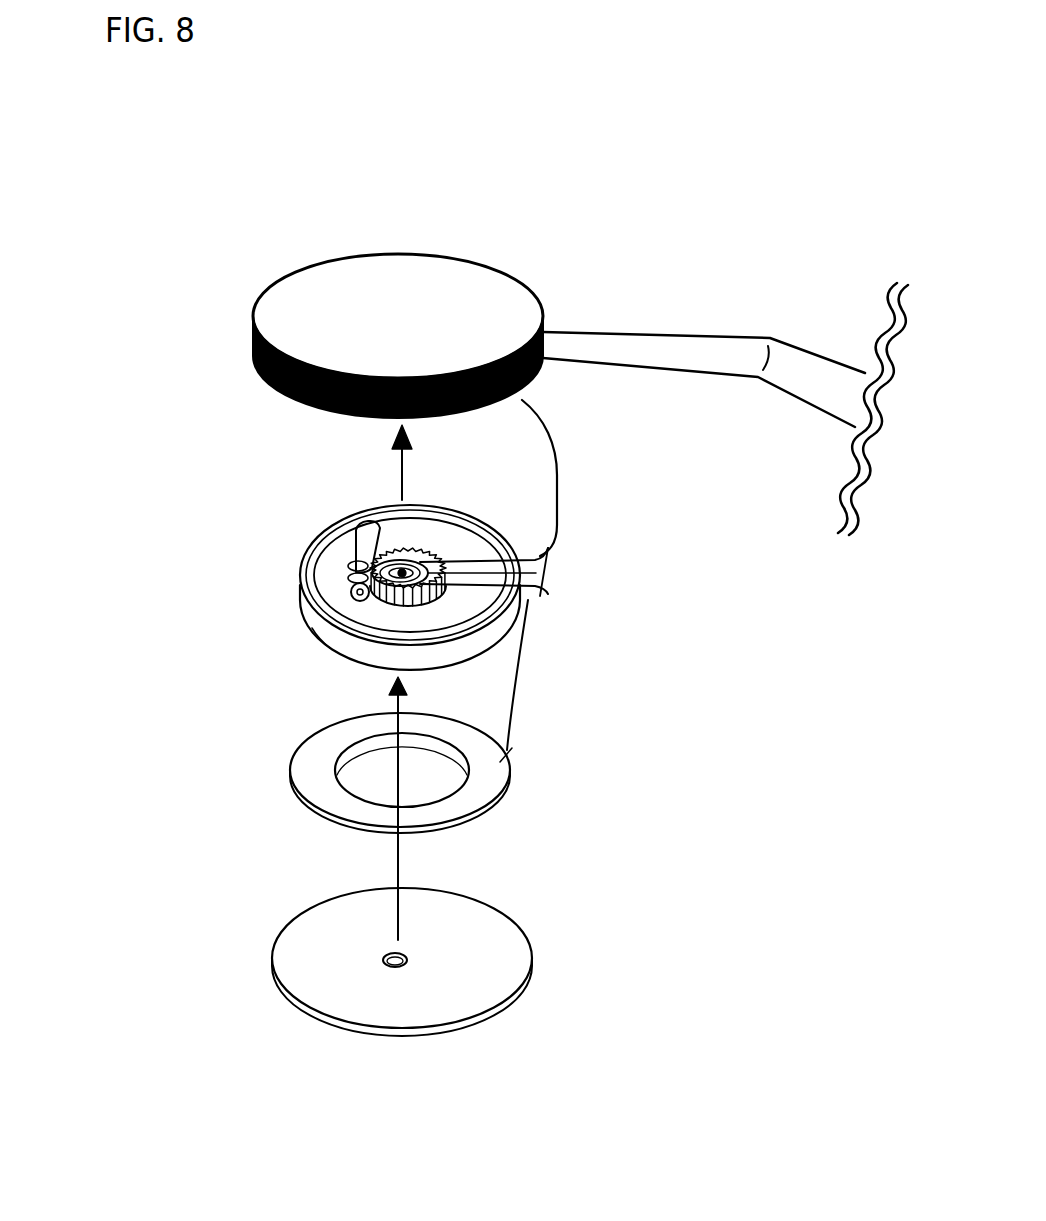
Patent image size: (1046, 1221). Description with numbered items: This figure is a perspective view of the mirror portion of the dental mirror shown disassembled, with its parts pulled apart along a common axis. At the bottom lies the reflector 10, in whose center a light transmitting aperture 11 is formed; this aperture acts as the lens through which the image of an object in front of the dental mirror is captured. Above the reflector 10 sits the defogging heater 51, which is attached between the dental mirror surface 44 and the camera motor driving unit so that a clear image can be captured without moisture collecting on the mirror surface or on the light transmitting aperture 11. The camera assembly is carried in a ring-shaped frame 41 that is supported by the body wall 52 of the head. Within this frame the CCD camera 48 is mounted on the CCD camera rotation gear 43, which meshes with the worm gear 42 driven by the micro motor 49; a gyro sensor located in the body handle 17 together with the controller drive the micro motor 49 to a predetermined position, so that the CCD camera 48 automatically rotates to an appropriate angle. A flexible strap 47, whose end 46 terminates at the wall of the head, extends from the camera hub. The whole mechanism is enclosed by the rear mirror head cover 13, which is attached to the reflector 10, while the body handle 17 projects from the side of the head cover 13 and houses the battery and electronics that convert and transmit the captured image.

The reflector 10 is at (525, 985).
The light transmitting aperture 11 is at (410, 955).
The rear mirror head cover 13 is at (385, 292).
The body handle 17 is at (635, 338).
The ring frame 41 is at (307, 547).
The worm gear 42 is at (343, 587).
The CCD camera rotation gear 43 is at (407, 612).
The dental mirror surface 44 is at (320, 640).
The strap end 46 is at (532, 590).
The strap 47 is at (547, 545).
The CCD camera 48 is at (362, 565).
The micro motor 49 is at (362, 532).
The defogging heater 51 is at (335, 825).
The body wall 52 is at (533, 655).